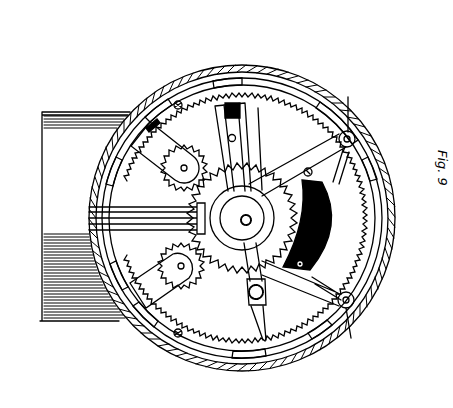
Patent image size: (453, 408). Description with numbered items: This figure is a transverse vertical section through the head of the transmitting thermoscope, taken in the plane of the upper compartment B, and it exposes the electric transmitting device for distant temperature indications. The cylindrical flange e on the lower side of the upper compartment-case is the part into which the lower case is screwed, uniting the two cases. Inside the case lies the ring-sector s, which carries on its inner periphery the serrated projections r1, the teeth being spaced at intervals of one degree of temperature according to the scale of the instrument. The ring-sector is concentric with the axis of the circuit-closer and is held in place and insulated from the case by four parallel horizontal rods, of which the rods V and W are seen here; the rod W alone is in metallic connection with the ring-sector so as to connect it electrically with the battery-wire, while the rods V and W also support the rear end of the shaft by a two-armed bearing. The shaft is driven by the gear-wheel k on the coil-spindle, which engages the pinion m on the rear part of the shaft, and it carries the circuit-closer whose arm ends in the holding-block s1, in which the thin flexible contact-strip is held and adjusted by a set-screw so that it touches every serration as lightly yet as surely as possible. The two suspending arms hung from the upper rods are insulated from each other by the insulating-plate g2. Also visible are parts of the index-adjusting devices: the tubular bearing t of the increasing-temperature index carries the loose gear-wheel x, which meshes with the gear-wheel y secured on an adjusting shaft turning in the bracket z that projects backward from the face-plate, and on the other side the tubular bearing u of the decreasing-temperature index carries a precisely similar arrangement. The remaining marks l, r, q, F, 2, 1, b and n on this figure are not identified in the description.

The cylindrical flange e is at (85, 216).
The horizontal rod W is at (179, 343).
The compartment B is at (233, 357).
The ring-sector s is at (245, 214).
The horizontal rod V is at (179, 100).
The serrated projections r1 is at (347, 96).
The tubular bearing t is at (249, 146).
The stop block l is at (249, 121).
The ring block r is at (176, 130).
The upper pinion q is at (181, 169).
The lower pinion F is at (178, 265).
The pinion plates 2 is at (164, 215).
The rod 1 is at (147, 218).
The bracket z is at (242, 218).
The pinion m is at (242, 218).
The gear-wheel x is at (302, 163).
The insulating-plate g2 is at (317, 225).
The gear-wheel k is at (301, 283).
The tubular bearing u is at (346, 323).
The gear-wheel y is at (279, 279).
The holding-block s1 is at (260, 294).
The pointer tip b is at (256, 323).
The lower screw n is at (193, 325).